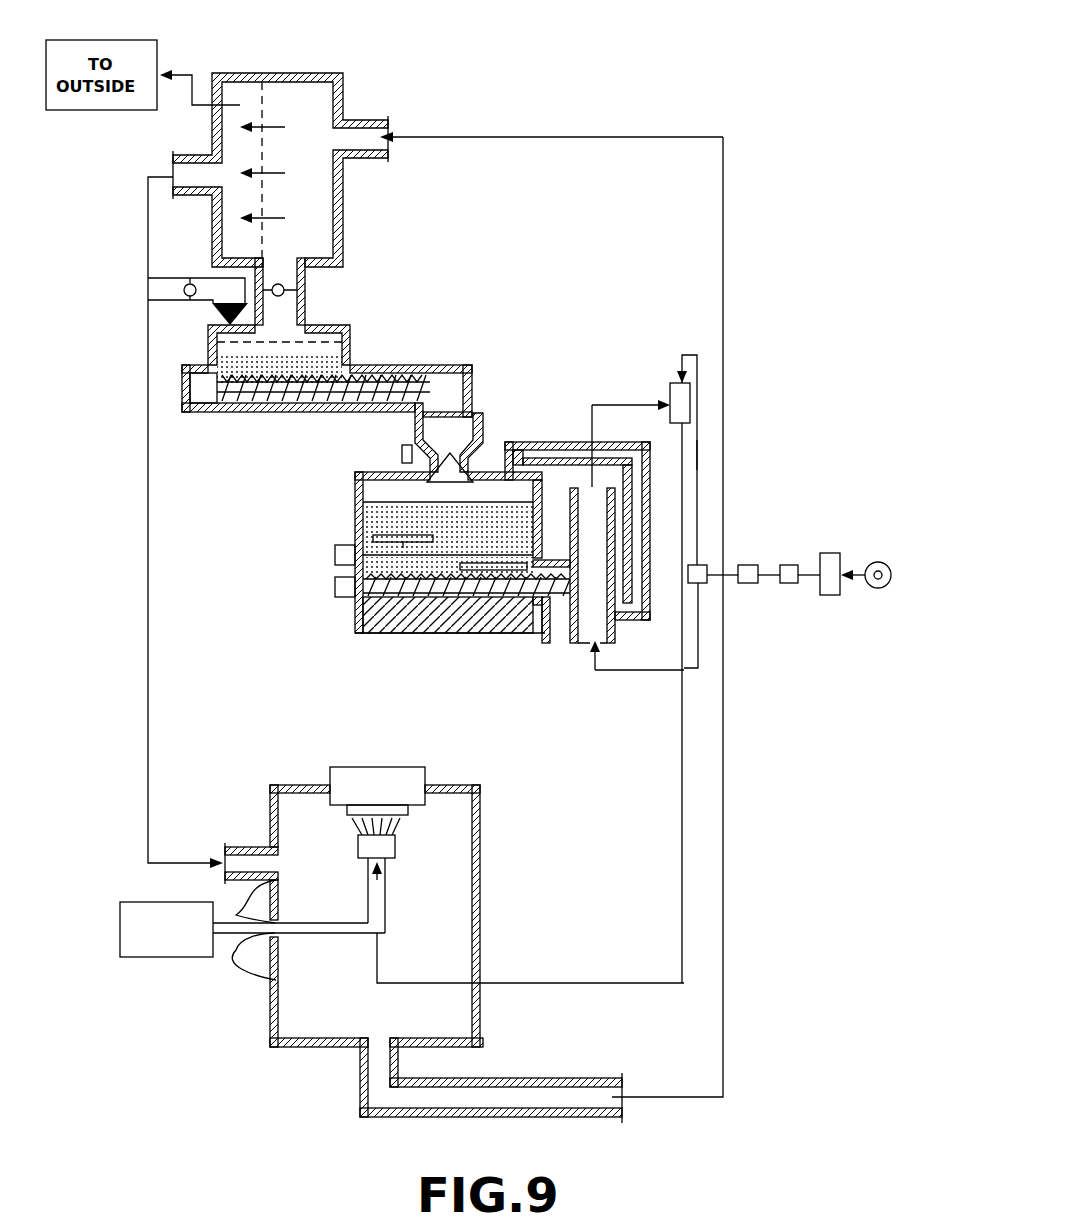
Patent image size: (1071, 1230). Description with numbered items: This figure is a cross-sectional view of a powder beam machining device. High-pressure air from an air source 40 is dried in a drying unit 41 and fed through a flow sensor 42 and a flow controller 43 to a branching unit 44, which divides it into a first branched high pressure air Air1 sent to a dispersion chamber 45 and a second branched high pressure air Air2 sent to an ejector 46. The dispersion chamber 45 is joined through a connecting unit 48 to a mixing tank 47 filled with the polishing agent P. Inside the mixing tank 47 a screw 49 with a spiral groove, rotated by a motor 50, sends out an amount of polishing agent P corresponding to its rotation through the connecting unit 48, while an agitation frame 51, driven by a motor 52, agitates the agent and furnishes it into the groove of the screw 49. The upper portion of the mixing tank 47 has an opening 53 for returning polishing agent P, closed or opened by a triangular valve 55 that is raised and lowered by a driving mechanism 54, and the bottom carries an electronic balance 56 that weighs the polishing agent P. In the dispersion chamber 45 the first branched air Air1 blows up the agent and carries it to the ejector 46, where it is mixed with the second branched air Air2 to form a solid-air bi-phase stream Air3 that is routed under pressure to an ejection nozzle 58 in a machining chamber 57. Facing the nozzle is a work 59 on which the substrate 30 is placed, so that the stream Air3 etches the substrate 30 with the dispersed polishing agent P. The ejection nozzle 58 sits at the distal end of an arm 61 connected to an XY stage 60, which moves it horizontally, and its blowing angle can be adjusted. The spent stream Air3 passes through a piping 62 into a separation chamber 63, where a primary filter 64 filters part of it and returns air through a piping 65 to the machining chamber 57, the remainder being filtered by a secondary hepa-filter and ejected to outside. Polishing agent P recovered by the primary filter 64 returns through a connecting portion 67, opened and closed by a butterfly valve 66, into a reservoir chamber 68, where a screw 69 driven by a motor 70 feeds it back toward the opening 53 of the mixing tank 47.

The substrate 30 is at (410, 812).
The air source 40 is at (878, 560).
The drying unit 41 is at (828, 595).
The flow sensor 42 is at (790, 563).
The flow controller 43 is at (750, 583).
The branching unit 44 is at (703, 563).
The dispersion chamber 45 is at (613, 633).
The ejector 46 is at (670, 392).
The mixing tank 47 is at (355, 487).
The connecting unit 48 is at (555, 607).
The screw 49 is at (437, 590).
The motor 50 is at (335, 588).
The agitation frame 51 is at (487, 567).
The motor 52 is at (335, 550).
The opening 53 is at (483, 427).
The driving mechanism 54 is at (402, 450).
The triangular valve 55 is at (480, 465).
The electronic balance 56 is at (380, 633).
The machining chamber 57 is at (483, 840).
The ejection nozzle 58 is at (395, 843).
The work 59 is at (378, 777).
The XY stage 60 is at (168, 957).
The arm 61 is at (323, 933).
The piping 62 is at (552, 1078).
The separation chamber 63 is at (212, 133).
The primary filter 64 is at (262, 105).
The piping 65 is at (147, 492).
The butterfly valve 66 is at (284, 287).
The connecting portion 67 is at (305, 297).
The reservoir chamber 68 is at (350, 338).
The screw 69 is at (258, 412).
The motor 70 is at (202, 397).
The polishing agent P is at (390, 513).
The first branched high pressure air Air1 is at (613, 670).
The second branched high pressure air Air2 is at (698, 453).
The solid-air bi-phase stream Air3 is at (652, 983).